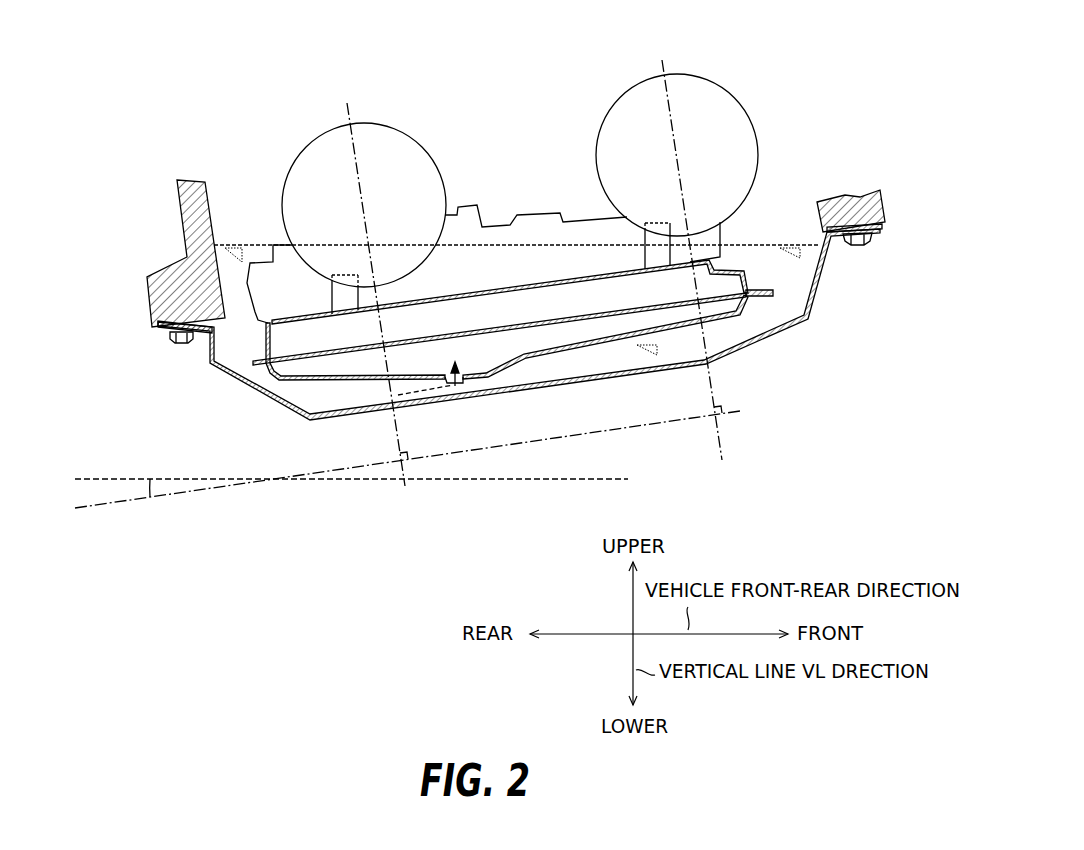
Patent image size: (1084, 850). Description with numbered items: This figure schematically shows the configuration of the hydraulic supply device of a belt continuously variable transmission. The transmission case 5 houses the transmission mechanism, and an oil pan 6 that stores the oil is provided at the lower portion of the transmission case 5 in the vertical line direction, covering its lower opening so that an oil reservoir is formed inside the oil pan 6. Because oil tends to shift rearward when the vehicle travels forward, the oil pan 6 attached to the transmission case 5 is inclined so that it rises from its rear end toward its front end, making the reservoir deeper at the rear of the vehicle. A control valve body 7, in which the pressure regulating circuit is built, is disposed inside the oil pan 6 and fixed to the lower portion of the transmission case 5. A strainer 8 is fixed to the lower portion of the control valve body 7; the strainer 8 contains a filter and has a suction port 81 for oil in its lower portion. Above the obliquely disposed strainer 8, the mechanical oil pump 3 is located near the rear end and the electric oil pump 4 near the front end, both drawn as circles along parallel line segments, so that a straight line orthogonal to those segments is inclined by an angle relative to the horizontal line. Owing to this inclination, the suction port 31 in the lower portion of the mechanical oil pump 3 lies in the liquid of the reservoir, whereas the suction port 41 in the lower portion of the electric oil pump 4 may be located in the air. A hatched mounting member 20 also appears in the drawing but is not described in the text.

The mechanical oil pump 3 is at (283, 186).
The electric oil pump 4 is at (715, 80).
The transmission case 5 is at (147, 288).
The oil pan 6 is at (228, 385).
The control valve body 7 is at (521, 213).
The strainer 8 is at (272, 400).
The mount bracket 20 is at (222, 299).
The suction port 31 is at (333, 290).
The suction port 41 is at (645, 236).
The suction port 81 is at (468, 386).